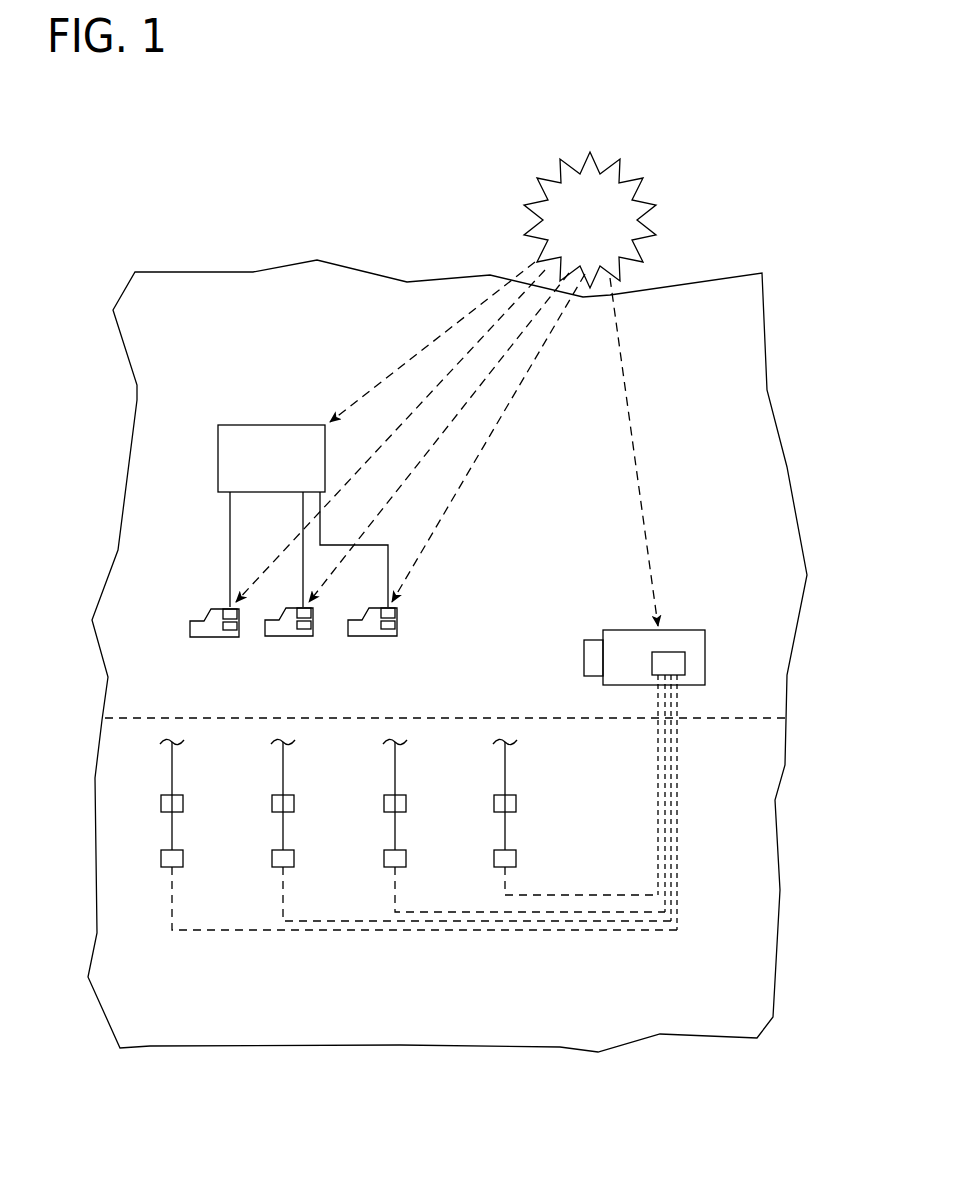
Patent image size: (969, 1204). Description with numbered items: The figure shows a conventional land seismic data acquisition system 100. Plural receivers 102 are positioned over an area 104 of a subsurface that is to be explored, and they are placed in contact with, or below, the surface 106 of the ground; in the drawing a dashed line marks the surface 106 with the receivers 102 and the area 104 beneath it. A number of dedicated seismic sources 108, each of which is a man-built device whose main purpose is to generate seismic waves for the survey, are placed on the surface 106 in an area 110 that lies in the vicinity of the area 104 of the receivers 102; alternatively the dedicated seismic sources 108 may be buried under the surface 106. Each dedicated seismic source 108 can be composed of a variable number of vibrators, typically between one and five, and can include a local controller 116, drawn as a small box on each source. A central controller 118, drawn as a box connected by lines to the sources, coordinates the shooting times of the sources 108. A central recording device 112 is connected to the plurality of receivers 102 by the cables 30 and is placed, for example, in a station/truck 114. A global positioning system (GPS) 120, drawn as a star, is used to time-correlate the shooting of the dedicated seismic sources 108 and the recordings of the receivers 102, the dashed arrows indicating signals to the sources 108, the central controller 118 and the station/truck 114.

The system 100 is at (458, 88).
The receivers 102 is at (494, 858).
The area of a subsurface 104 is at (737, 935).
The surface 106 is at (88, 644).
The dedicated seismic sources 108 is at (207, 637).
The area 110 is at (760, 492).
The central recording device 112 is at (680, 665).
The station/truck 114 is at (698, 626).
The local controller 116 is at (231, 637).
The central controller 118 is at (233, 425).
The global positioning system (GPS) 120 is at (622, 165).
The cables 30 is at (657, 740).